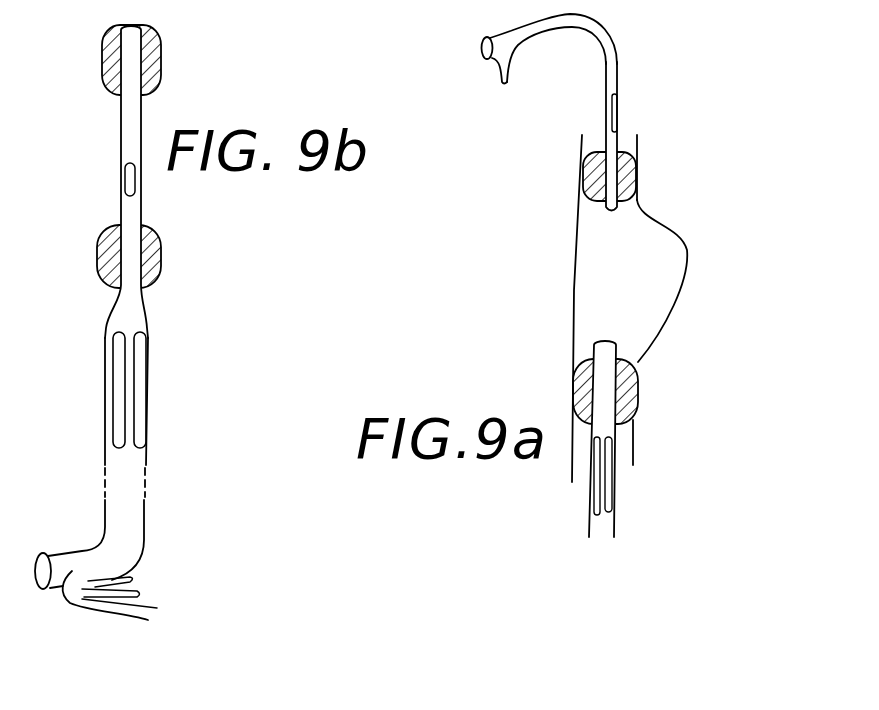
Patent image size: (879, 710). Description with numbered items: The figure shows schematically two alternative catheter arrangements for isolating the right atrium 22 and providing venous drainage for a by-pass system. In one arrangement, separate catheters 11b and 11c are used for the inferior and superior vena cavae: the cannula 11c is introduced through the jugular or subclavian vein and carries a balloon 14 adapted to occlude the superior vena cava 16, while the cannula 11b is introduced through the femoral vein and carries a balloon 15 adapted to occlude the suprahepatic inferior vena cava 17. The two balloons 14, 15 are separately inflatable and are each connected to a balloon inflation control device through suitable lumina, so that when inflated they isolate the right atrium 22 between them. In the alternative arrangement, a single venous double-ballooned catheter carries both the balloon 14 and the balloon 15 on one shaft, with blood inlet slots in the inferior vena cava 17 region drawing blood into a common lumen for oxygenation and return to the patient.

In FIG. 9A, the catheter 11b is at (598, 526).
In FIG. 9A, the catheter 11c is at (613, 62).
In FIG. 9B, the balloon 14 is at (158, 63).
In FIG. 9A, the balloon 14 is at (627, 179).
In FIG. 9B, the balloon 15 is at (152, 260).
In FIG. 9A, the balloon 15 is at (625, 397).
In FIG. 9A, the superior vena cava 16 is at (642, 147).
In FIG. 9A, the suprahepatic inferior vena cava 17 is at (633, 458).
In FIG. 9A, the right atrium 22 is at (663, 252).